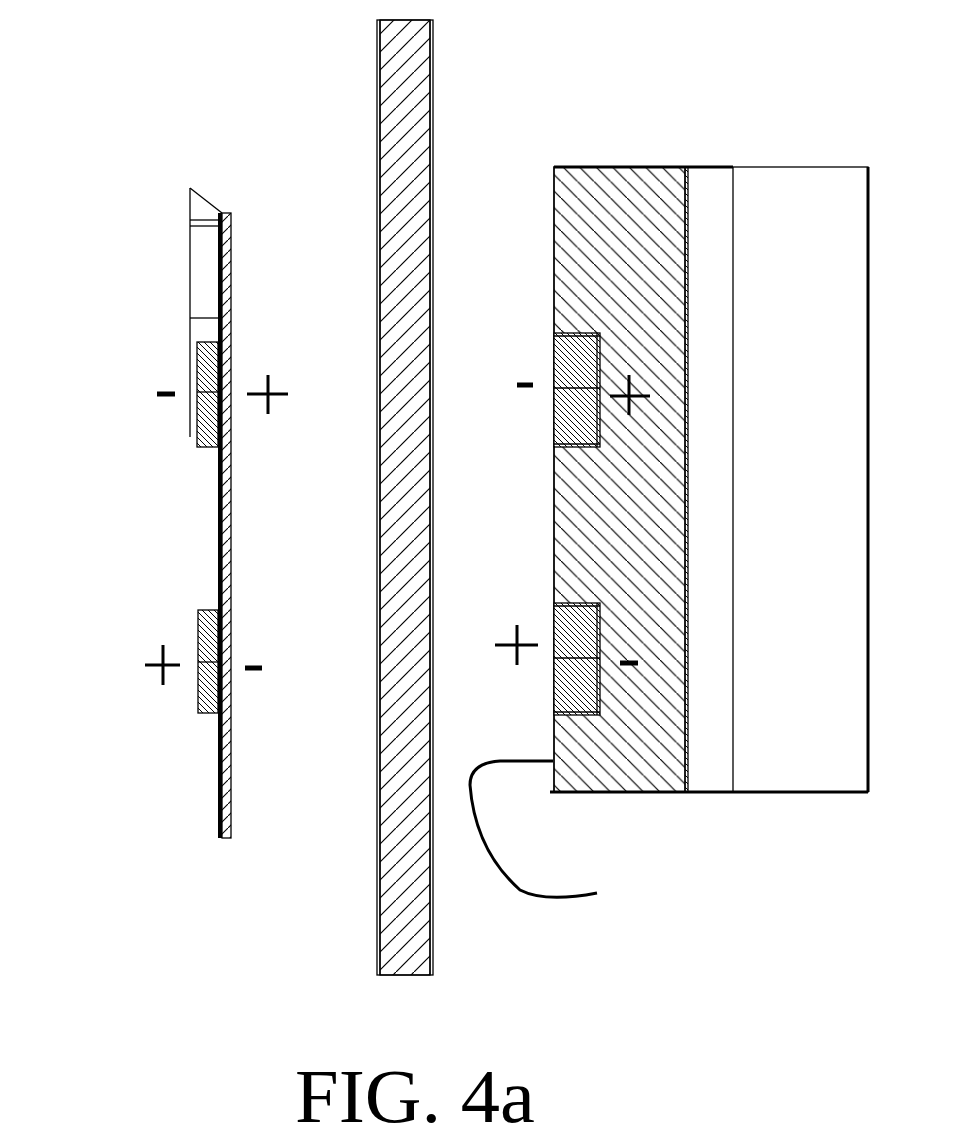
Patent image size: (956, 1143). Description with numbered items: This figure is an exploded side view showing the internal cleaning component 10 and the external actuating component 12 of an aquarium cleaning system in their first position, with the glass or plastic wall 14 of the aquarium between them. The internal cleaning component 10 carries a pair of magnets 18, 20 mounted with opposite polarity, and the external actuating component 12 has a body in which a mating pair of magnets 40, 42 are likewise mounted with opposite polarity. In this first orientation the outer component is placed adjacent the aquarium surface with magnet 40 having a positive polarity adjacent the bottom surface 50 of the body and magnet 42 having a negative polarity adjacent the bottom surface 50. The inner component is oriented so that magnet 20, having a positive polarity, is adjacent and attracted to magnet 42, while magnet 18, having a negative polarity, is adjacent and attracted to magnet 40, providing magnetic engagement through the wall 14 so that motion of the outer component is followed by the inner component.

The internal cleaning component 10 is at (165, 285).
The external actuating component 12 is at (668, 148).
The glass or plastic wall 14 is at (432, 113).
The magnet 18 is at (208, 616).
The magnet 20 is at (207, 436).
The magnet 40 is at (575, 692).
The magnet 42 is at (572, 420).
The bottom surface 50 is at (554, 834).